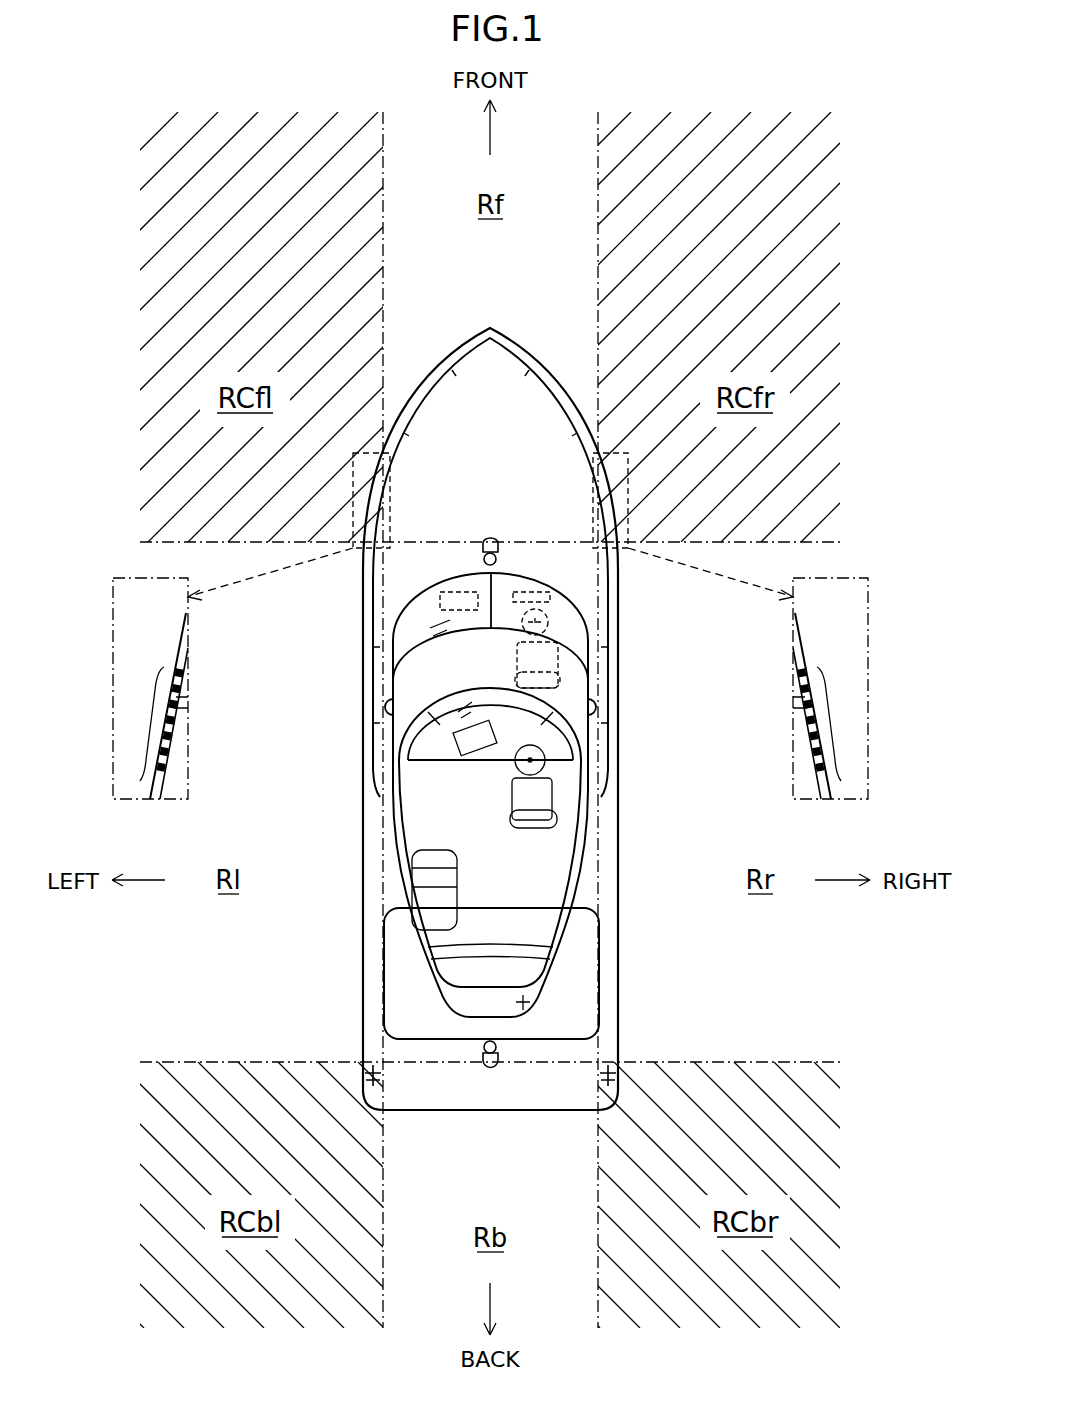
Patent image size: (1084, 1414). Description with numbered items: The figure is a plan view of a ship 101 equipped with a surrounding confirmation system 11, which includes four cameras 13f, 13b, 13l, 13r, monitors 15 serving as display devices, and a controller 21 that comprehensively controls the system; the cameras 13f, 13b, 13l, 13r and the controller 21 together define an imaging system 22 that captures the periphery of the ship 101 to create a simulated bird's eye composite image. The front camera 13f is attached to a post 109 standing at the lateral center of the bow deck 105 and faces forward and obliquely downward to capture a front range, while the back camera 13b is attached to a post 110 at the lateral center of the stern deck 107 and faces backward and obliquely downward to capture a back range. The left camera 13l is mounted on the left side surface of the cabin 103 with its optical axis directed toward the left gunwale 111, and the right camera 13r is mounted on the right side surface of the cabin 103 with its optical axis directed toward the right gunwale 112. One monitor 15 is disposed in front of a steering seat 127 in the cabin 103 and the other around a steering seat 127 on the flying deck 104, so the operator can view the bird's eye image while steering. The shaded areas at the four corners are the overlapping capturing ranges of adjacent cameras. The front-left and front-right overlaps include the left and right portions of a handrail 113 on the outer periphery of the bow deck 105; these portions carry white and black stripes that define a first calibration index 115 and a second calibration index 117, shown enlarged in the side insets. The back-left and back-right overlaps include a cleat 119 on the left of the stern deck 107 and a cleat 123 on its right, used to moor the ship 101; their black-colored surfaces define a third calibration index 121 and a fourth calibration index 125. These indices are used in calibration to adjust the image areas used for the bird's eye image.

The surrounding confirmation system 11 is at (491, 743).
The ship 101 is at (529, 341).
The cabin 103 is at (590, 637).
The flying deck 104 is at (428, 817).
The bow deck 105 is at (468, 437).
The stern deck 107 is at (518, 1104).
The post 109 is at (483, 560).
The post 110 is at (484, 1047).
The left gunwale 111 is at (363, 623).
The right gunwale 112 is at (618, 913).
The handrail 113 is at (457, 353).
The first calibration index 115 is at (148, 725).
The second calibration index 117 is at (832, 725).
The cleat 119 is at (332, 1028).
The third calibration index 121 is at (368, 1082).
The cleat 123 is at (676, 1045).
The fourth calibration index 125 is at (615, 1082).
The steering seat 127 is at (530, 832).
The front camera 13f is at (490, 537).
The back camera 13b is at (488, 1068).
The left camera 13l is at (383, 707).
The right camera 13r is at (600, 708).
The monitor 15 is at (475, 742).
The controller 21 is at (440, 600).
The imaging system 22 is at (450, 1131).